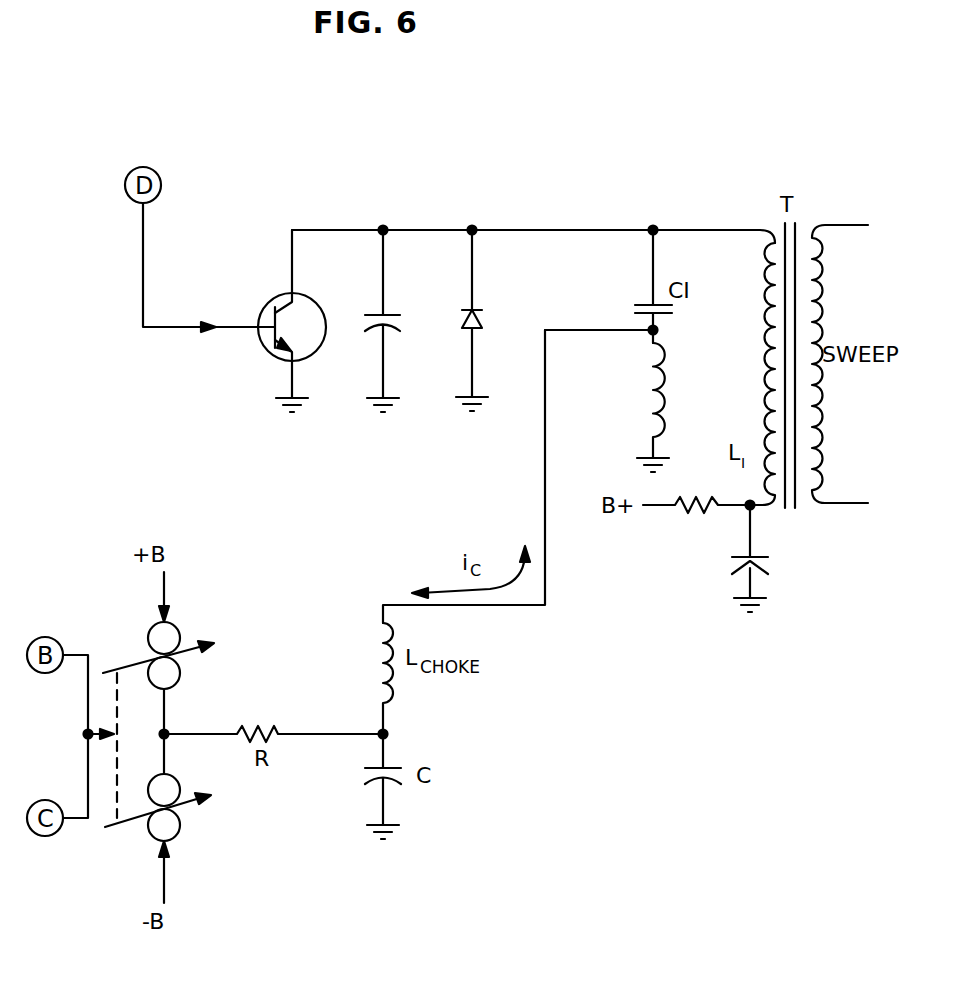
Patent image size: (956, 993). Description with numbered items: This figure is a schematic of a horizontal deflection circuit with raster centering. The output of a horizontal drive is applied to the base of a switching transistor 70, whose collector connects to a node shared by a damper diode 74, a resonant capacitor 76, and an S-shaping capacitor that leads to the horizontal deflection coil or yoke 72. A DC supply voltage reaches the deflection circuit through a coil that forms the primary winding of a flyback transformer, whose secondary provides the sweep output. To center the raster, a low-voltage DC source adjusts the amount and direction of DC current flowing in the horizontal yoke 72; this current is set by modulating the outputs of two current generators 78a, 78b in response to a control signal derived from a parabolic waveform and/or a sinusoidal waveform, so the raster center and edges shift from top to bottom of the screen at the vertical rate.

The switching transistor 70 is at (270, 357).
The horizontal deflection coil or yoke 72 is at (648, 393).
The damper diode 74 is at (486, 322).
The resonant capacitor 76 is at (384, 313).
The current generator 78a is at (182, 673).
The current generator 78b is at (182, 830).